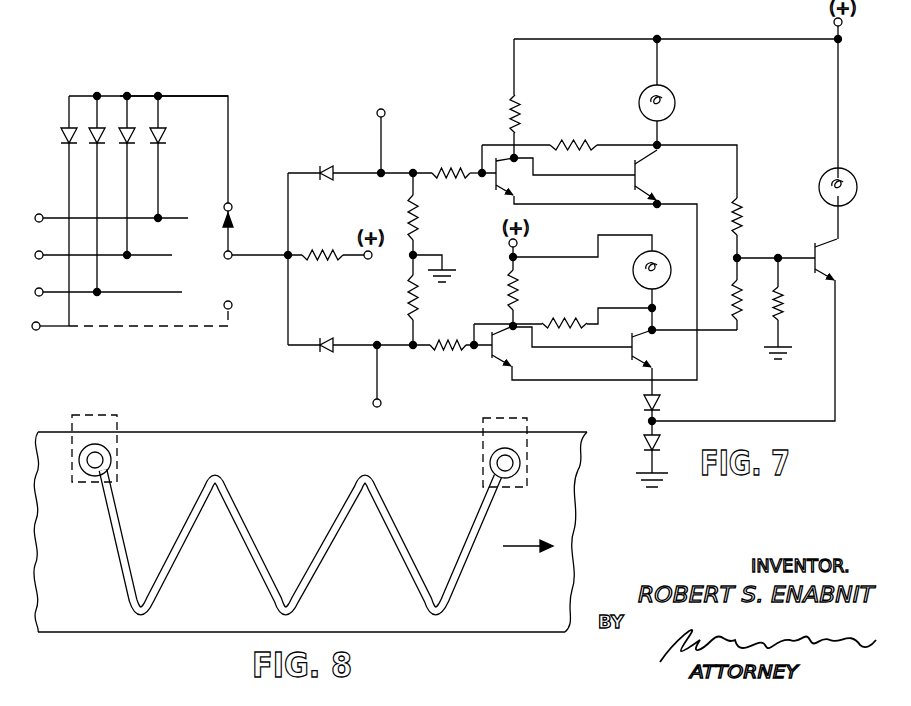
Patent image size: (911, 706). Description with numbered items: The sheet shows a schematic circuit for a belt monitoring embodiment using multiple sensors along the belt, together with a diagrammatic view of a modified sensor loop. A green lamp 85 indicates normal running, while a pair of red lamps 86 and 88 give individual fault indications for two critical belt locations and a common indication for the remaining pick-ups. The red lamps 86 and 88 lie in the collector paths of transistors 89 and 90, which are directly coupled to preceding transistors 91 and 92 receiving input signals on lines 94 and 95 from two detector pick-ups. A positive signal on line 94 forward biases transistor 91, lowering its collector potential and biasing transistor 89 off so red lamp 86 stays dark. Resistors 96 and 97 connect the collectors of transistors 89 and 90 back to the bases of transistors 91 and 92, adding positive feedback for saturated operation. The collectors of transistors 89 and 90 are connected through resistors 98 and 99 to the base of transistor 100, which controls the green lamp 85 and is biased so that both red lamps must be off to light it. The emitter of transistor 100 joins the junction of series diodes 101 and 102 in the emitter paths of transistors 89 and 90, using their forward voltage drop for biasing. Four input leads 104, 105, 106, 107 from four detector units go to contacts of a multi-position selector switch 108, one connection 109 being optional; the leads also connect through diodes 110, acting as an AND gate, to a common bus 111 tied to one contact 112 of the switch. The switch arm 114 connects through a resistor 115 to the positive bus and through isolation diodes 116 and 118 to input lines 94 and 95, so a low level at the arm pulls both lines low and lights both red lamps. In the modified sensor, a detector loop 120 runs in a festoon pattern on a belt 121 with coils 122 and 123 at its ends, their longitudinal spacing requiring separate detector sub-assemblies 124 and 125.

In FIG. 7, the green lamp 85 is at (822, 172).
In FIG. 7, the red lamp 86 is at (675, 94).
In FIG. 7, the red lamp 88 is at (668, 262).
In FIG. 7, the transistor 89 is at (657, 180).
In FIG. 7, the transistor 90 is at (653, 353).
In FIG. 7, the transistor 91 is at (496, 185).
In FIG. 7, the transistor 92 is at (498, 350).
In FIG. 7, the input line 94 is at (381, 125).
In FIG. 7, the input line 95 is at (377, 394).
In FIG. 7, the resistor 96 is at (575, 144).
In FIG. 7, the resistor 97 is at (572, 321).
In FIG. 7, the resistor 98 is at (742, 214).
In FIG. 7, the resistor 99 is at (740, 304).
In FIG. 7, the transistor 100 is at (836, 254).
In FIG. 7, the diode 101 is at (640, 407).
In FIG. 7, the diode 102 is at (640, 442).
In FIG. 7, the input lead 104 is at (35, 215).
In FIG. 7, the input lead 105 is at (35, 255).
In FIG. 7, the input lead 106 is at (35, 292).
In FIG. 7, the input lead 107 is at (32, 326).
In FIG. 7, the multi-position selector switch 108 is at (238, 203).
In FIG. 7, the optional connection 109 is at (187, 330).
In FIG. 7, the diodes 110 is at (80, 131).
In FIG. 7, the common bus 111 is at (188, 96).
In FIG. 7, the switch contact 112 is at (224, 207).
In FIG. 7, the switch arm 114 is at (231, 255).
In FIG. 7, the resistor 115 is at (329, 260).
In FIG. 7, the diode 116 is at (324, 166).
In FIG. 7, the diode 118 is at (324, 353).
In FIG. 8, the detector loop 120 is at (252, 518).
In FIG. 8, the belt 121 is at (228, 432).
In FIG. 8, the coil 122 is at (103, 460).
In FIG. 8, the coil 123 is at (492, 470).
In FIG. 8, the detector sub-assembly 124 is at (117, 429).
In FIG. 8, the detector sub-assembly 125 is at (478, 426).